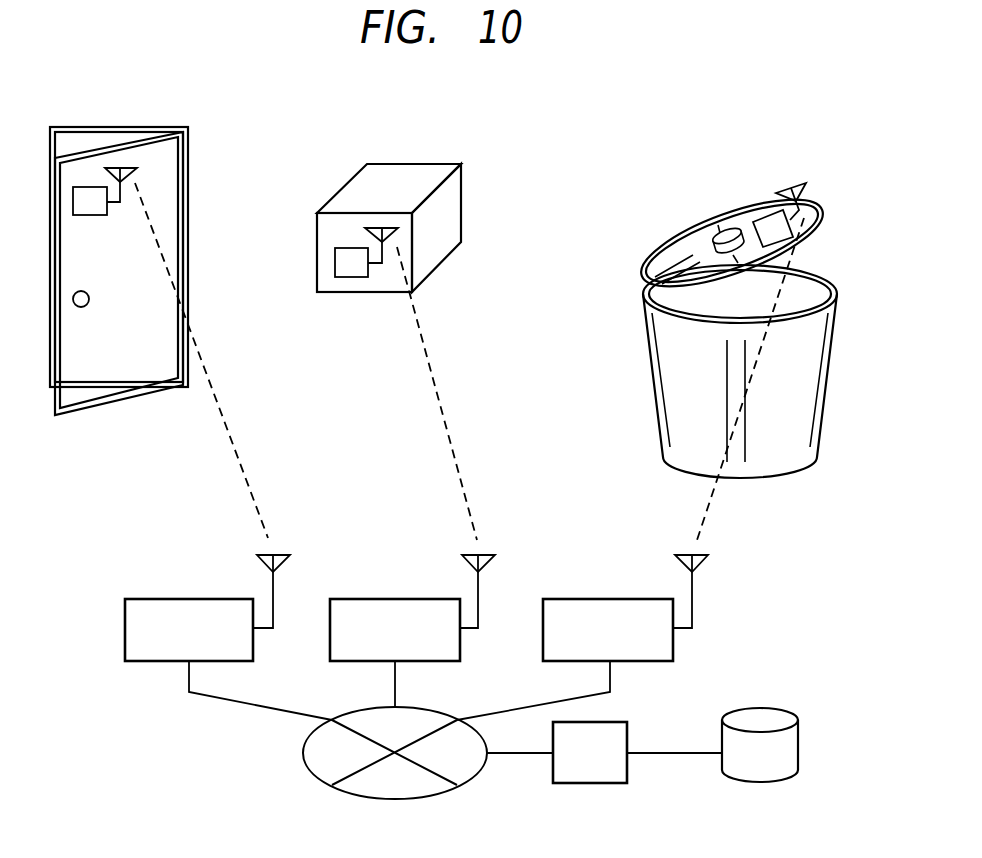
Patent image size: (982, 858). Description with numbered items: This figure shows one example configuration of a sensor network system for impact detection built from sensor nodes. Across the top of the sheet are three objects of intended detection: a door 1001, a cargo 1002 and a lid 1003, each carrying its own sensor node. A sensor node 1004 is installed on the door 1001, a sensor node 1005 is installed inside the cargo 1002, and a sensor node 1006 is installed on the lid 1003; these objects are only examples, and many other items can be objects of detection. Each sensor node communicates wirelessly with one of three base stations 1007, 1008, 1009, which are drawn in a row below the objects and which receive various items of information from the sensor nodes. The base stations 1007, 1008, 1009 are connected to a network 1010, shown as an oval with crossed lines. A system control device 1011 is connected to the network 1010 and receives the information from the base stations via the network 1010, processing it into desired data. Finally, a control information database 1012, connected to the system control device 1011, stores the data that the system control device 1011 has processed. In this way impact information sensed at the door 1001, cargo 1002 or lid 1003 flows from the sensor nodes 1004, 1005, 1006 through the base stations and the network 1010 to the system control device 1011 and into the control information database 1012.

The door 1001 is at (165, 197).
The cargo 1002 is at (450, 210).
The lid 1003 is at (685, 250).
The sensor node 1004 is at (88, 207).
The sensor node 1005 is at (352, 268).
The sensor node 1006 is at (772, 222).
The base station 1007 is at (173, 597).
The base station 1008 is at (382, 597).
The base station 1009 is at (607, 597).
The network 1010 is at (427, 798).
The system control device 1011 is at (602, 785).
The control information database 1012 is at (760, 782).